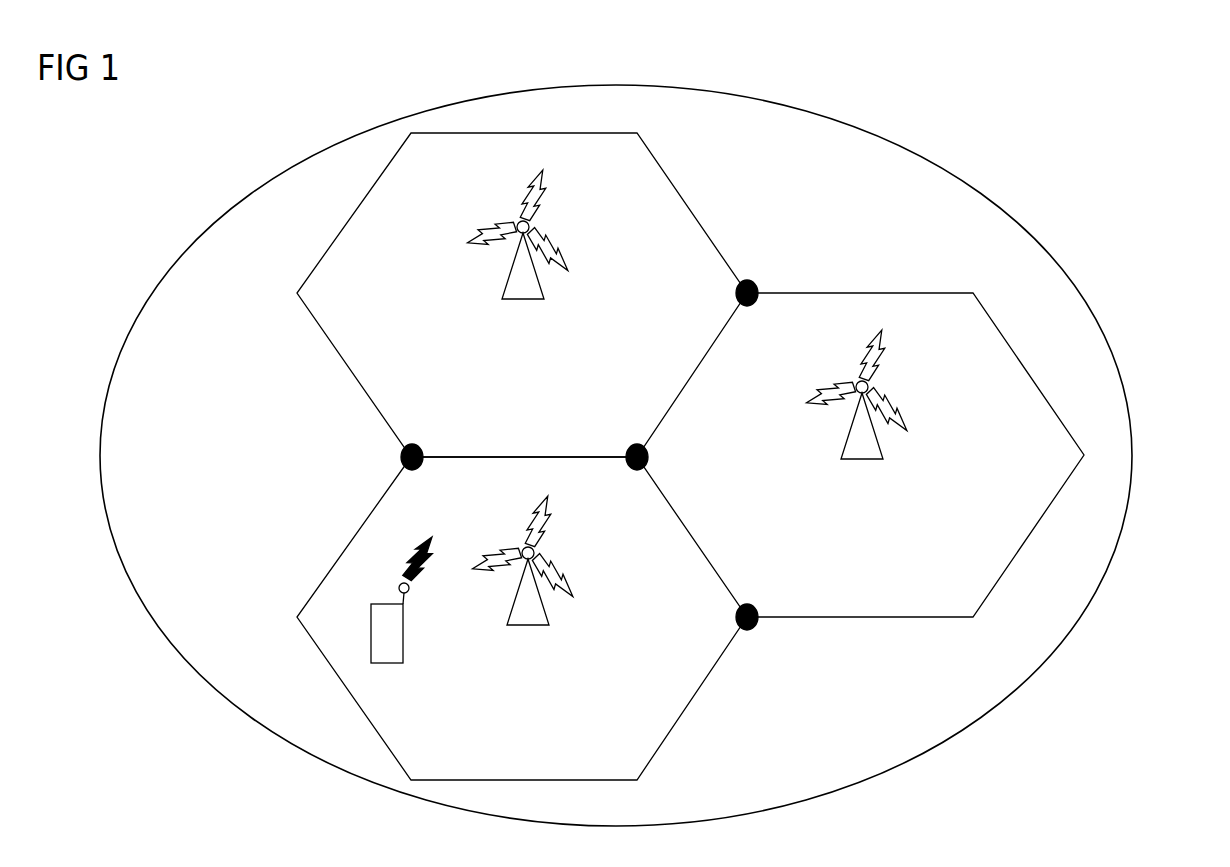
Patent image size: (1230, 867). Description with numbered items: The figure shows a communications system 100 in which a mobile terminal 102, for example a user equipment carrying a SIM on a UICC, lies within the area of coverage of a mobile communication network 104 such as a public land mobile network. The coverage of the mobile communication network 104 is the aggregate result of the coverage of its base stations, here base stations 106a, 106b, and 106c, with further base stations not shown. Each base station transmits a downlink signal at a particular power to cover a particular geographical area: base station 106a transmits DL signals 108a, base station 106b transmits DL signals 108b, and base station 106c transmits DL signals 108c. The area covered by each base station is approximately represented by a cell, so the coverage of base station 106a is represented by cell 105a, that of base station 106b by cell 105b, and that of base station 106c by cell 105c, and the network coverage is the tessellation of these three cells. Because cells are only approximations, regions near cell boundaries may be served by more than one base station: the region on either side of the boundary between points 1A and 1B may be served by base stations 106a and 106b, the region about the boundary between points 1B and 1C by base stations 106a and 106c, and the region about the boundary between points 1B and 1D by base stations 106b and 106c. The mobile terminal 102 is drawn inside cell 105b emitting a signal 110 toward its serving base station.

The communications system 100 is at (1128, 142).
The mobile terminal 102 is at (385, 645).
The mobile communication network 104 is at (1034, 672).
The cell 105a is at (333, 347).
The cell 105b is at (335, 562).
The cell 105c is at (838, 294).
The base station 106a is at (518, 275).
The base station 106b is at (522, 603).
The base station 106c is at (857, 444).
The downlink signals 108a is at (537, 200).
The downlink signals 108b is at (543, 522).
The downlink signals 108c is at (875, 357).
The uplink signal from user equipment 110 is at (423, 543).
The point 1A is at (422, 445).
The point 1B is at (628, 447).
The point 1C is at (738, 292).
The point 1D is at (755, 610).